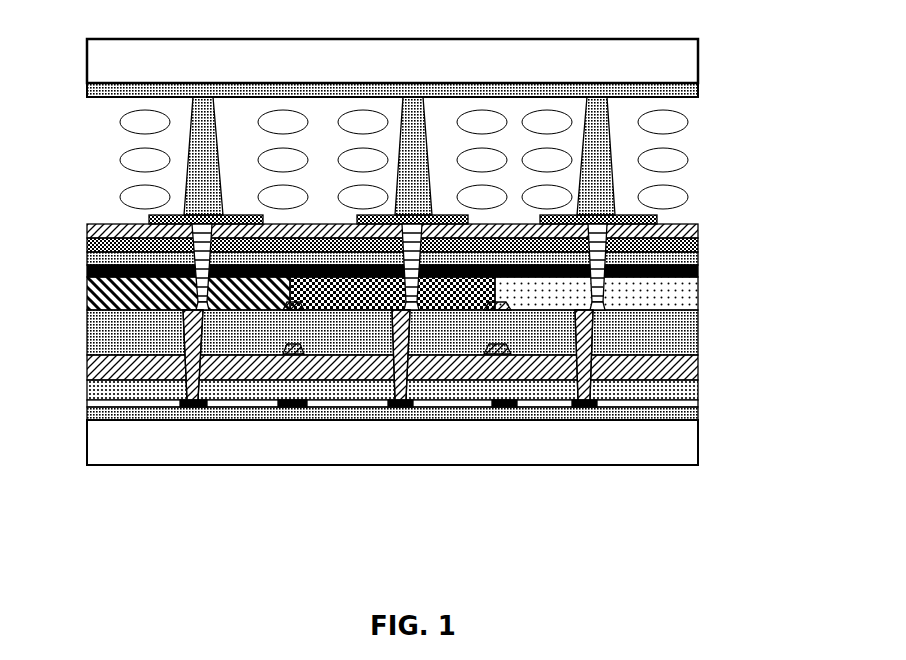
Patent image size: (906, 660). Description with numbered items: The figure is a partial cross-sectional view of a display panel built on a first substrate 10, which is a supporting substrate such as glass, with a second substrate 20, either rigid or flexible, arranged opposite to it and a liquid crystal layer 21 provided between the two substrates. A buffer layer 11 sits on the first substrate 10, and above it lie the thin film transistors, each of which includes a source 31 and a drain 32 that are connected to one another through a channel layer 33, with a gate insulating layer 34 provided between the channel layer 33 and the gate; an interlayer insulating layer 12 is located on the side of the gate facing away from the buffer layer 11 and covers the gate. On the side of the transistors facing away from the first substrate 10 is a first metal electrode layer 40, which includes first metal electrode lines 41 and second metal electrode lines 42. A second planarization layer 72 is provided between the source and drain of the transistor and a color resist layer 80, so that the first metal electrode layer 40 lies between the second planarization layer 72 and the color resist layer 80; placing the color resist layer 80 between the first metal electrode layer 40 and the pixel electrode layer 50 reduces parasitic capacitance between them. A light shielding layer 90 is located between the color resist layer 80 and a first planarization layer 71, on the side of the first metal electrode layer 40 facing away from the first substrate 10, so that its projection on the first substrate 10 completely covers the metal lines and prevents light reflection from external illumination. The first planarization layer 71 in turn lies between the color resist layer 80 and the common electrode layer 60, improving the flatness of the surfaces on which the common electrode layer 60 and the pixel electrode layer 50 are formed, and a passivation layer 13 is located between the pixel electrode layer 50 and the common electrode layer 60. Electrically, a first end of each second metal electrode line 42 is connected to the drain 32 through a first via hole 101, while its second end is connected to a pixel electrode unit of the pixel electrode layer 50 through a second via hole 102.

The first substrate 10 is at (699, 460).
The buffer layer 11 is at (699, 413).
The interlayer insulating layer 12 is at (699, 364).
The passivation layer 13 is at (699, 225).
The second substrate 20 is at (699, 32).
The liquid crystal layer 21 is at (688, 147).
The source 31 is at (315, 420).
The drain 32 is at (192, 420).
The channel layer 33 is at (278, 420).
The gate insulating layer 34 is at (112, 420).
The first metal electrode layer 40 is at (492, 437).
The first metal electrode lines 41 is at (473, 420).
The second metal electrode lines 42 is at (417, 420).
The pixel electrode layer 50 is at (149, 218).
The common electrode layer 60 is at (87, 245).
The first planarization layer 71 is at (699, 255).
The second planarization layer 72 is at (699, 343).
The color resist layer 80 is at (699, 295).
The light shielding layer 90 is at (699, 268).
The first via hole 101 is at (87, 328).
The second via hole 102 is at (87, 258).